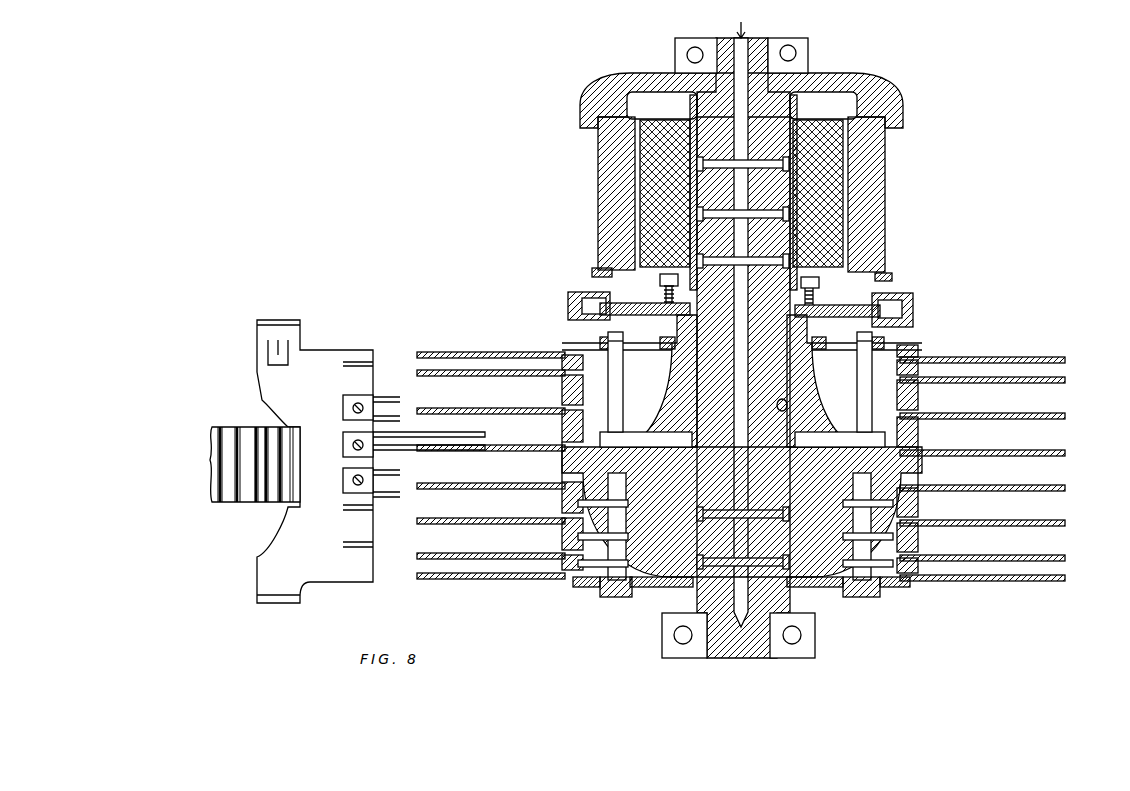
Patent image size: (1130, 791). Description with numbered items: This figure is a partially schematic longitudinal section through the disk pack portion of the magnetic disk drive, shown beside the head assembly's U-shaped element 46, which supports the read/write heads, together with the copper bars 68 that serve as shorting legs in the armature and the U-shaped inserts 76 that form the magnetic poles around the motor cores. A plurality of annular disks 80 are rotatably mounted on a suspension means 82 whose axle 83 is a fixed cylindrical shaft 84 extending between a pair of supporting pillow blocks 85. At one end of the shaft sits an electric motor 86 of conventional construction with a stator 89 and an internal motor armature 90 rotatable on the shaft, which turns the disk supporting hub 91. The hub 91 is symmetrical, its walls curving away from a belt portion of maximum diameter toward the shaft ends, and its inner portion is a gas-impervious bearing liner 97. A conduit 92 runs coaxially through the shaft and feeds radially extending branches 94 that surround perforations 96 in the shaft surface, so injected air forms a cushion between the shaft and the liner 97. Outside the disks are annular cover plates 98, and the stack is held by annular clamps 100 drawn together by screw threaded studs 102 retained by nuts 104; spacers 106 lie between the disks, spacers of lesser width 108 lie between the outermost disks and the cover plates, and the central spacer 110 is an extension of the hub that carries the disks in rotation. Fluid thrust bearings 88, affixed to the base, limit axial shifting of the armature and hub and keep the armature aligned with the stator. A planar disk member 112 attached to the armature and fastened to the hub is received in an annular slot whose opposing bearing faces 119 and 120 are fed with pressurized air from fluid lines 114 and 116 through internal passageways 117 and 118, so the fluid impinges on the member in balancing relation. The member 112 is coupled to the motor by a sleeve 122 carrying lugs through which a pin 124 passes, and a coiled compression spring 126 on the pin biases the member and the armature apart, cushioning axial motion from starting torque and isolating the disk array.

The U-shaped element 46 is at (325, 342).
The copper bars 68 is at (238, 427).
The U-shaped inserts 76 is at (230, 500).
The disks 80 is at (1058, 522).
The suspension means 82 is at (780, 600).
The axle 83 is at (728, 465).
The fixed cylindrical shaft 84 is at (718, 125).
The supporting pillow blocks 85 is at (823, 53).
The electric motor 86 is at (915, 95).
The fluid thrust bearings 88 is at (569, 283).
The stator 89 is at (600, 190).
The motor armature 90 is at (662, 126).
The disk supporting hub 91 is at (655, 420).
The conduit 92 is at (696, 590).
The radially extending branches 94 is at (760, 160).
The perforations 96 is at (770, 478).
The bearing liner 97 is at (786, 405).
The annular cover plates 98 is at (465, 352).
The annular clamps 100 is at (642, 359).
The screw threaded studs 102 is at (561, 308).
The nuts 104 is at (600, 590).
The spacers 106 is at (562, 410).
The spacers of lesser width 108 is at (562, 358).
The central spacer 110 is at (562, 462).
The planar disk member 112 is at (818, 308).
The fluid line 114 is at (931, 287).
The fluid line 116 is at (953, 321).
The internal passageway 117 is at (905, 290).
The internal passageway 118 is at (605, 292).
The bearing face 119 is at (895, 280).
The bearing face 120 is at (862, 318).
The sleeve 122 is at (662, 284).
The pin 124 is at (665, 318).
The coiled compression spring 126 is at (662, 296).